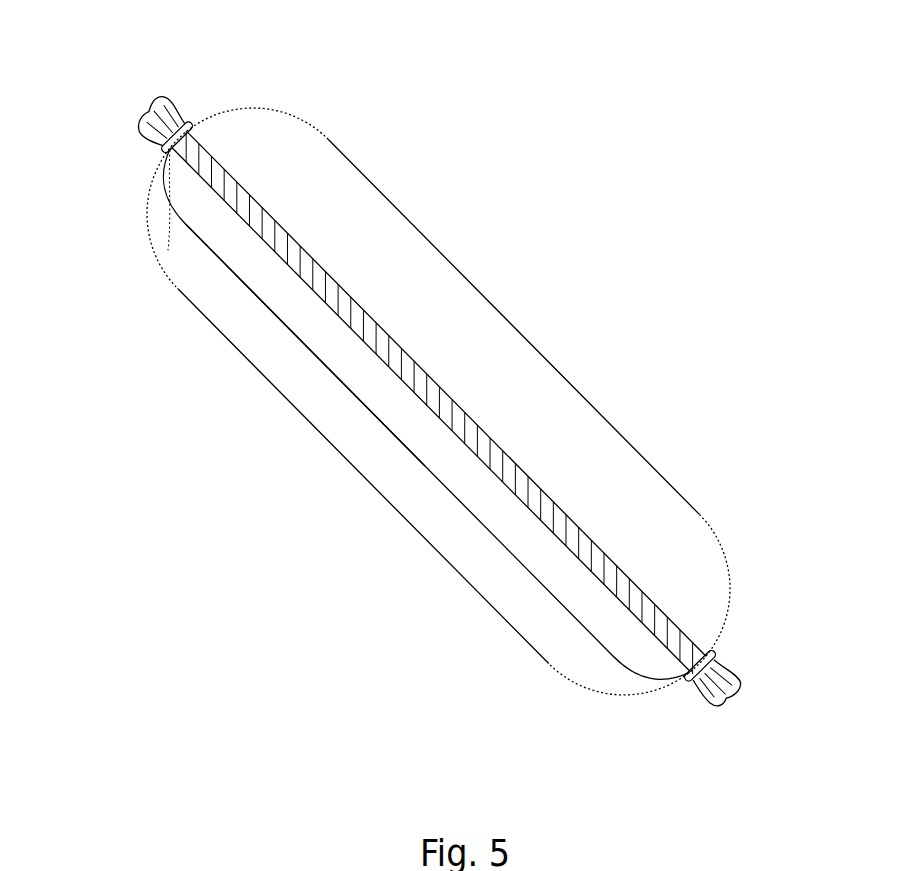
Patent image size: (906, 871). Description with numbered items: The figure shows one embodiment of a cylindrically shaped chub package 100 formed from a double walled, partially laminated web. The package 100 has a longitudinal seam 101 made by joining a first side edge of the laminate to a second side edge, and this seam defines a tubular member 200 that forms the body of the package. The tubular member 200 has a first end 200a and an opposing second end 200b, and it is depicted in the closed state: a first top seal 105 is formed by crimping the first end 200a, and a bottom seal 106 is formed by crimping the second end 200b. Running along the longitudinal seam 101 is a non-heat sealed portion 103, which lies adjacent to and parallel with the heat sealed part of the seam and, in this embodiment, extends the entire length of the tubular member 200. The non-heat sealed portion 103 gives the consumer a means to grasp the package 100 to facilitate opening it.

The chub package 100 is at (487, 297).
The longitudinal seam 101 is at (531, 479).
The non-heat sealed portion 103 is at (348, 373).
The first top seal 105 is at (688, 682).
The bottom seal 106 is at (163, 152).
The tubular member 200 is at (517, 618).
The first end 200a is at (735, 670).
The second end 200b is at (183, 123).